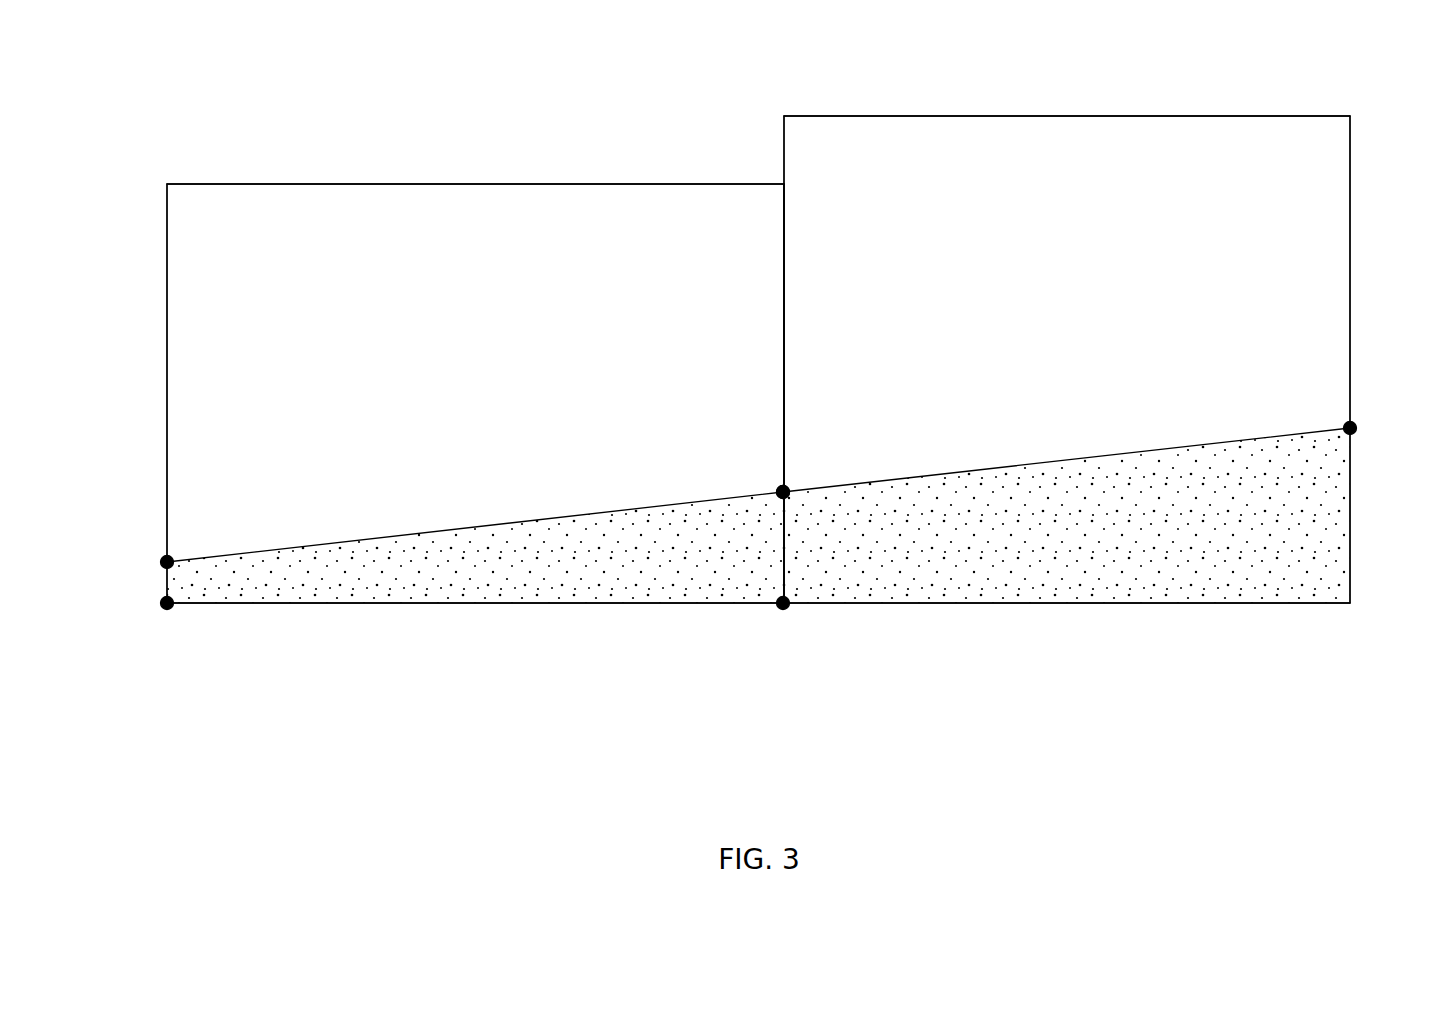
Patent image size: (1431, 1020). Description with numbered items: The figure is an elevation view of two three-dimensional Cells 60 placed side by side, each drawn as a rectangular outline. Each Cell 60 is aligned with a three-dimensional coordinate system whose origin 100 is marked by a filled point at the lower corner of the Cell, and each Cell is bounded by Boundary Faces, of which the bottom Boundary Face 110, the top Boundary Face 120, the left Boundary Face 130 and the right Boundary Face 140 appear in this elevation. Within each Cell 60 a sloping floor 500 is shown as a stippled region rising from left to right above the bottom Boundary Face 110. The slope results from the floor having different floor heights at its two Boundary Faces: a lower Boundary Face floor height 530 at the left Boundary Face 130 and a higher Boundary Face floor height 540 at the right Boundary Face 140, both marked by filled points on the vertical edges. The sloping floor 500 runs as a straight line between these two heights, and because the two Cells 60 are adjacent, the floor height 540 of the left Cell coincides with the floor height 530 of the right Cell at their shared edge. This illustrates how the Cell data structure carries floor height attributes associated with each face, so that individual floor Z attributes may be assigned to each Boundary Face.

The Cell 60 is at (262, 182).
The origin 100 is at (165, 610).
The Boundary Face 110 is at (310, 605).
The Boundary Face 120 is at (440, 183).
The Boundary Face 130 is at (166, 337).
The Boundary Face 140 is at (782, 243).
The sloping floor 500 is at (477, 527).
The Boundary Face floor height 530 is at (160, 563).
The Boundary Face floor height 540 is at (777, 497).